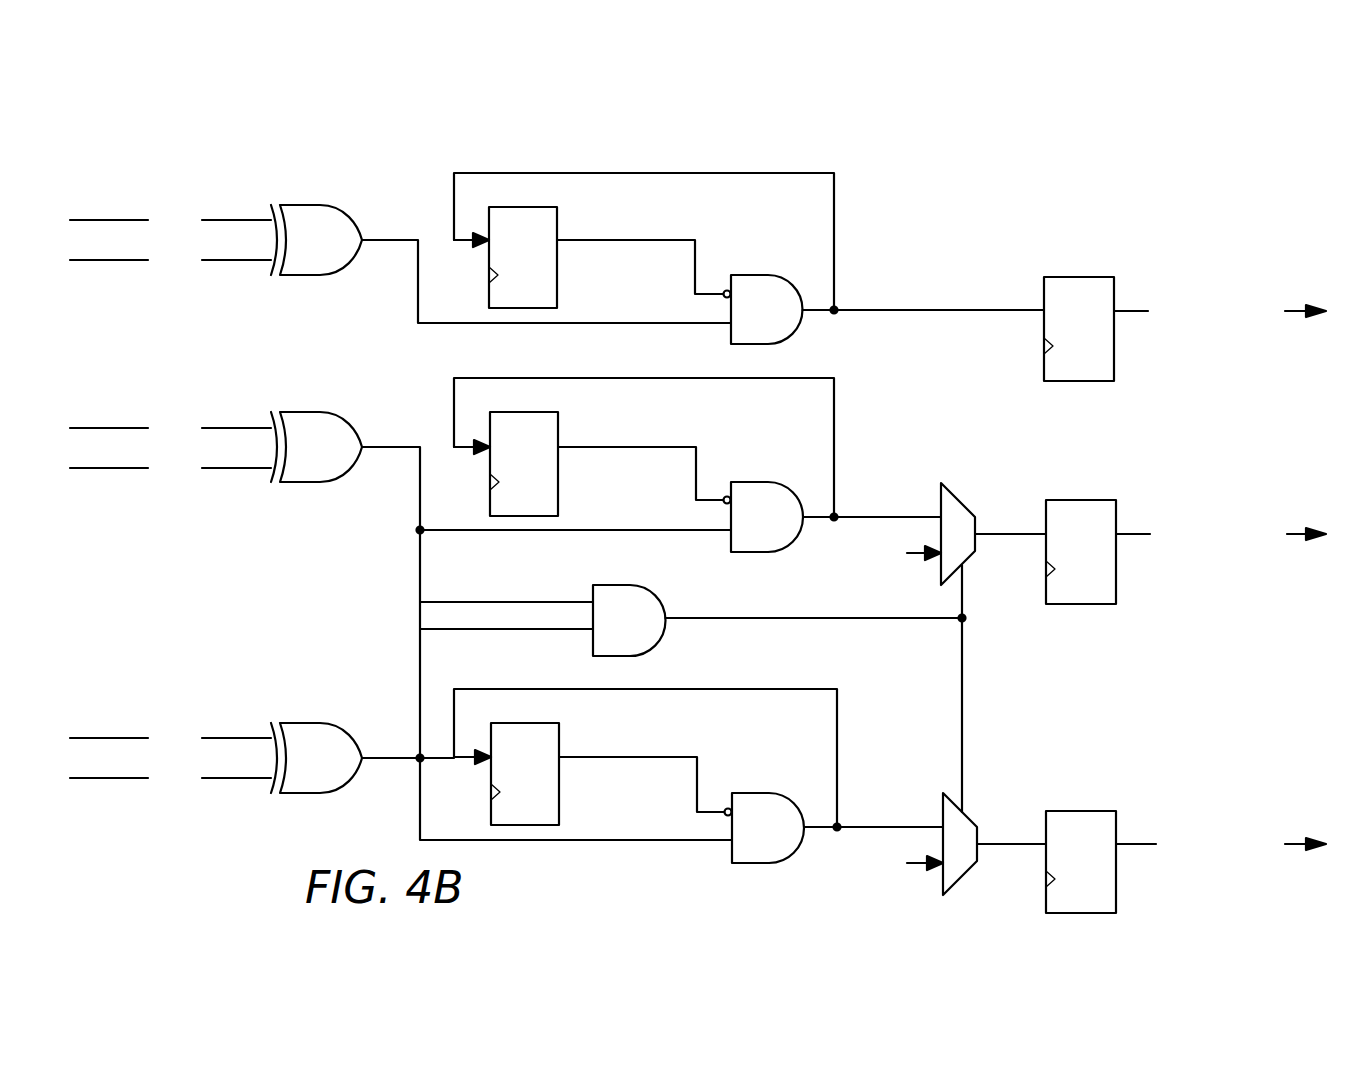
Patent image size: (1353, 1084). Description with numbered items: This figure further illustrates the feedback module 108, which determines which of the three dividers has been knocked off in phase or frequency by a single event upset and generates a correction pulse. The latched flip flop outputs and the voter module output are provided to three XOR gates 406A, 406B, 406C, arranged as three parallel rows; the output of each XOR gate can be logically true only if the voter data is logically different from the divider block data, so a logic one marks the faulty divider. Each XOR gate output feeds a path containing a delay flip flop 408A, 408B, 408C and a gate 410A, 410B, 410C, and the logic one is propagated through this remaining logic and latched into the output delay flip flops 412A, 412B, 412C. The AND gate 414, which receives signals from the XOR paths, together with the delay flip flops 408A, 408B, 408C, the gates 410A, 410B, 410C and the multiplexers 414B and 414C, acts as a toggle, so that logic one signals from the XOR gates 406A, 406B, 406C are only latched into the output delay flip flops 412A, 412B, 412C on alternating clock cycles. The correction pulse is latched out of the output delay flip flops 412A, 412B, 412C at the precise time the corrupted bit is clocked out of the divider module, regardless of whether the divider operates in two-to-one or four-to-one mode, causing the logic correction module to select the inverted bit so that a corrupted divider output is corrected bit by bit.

The feedback module 108 is at (698, 491).
The XOR gate 406A is at (317, 205).
The XOR gate 406B is at (317, 411).
The XOR gate 406C is at (300, 722).
The delay flip flop 408A is at (549, 226).
The delay flip flop 408B is at (549, 429).
The delay flip flop 408C is at (549, 741).
The gate 410A is at (742, 277).
The gate 410B is at (742, 483).
The gate 410C is at (742, 793).
The output delay flip flop 412A is at (1078, 277).
The output delay flip flop 412B is at (1083, 500).
The output delay flip flop 412C is at (1083, 811).
The AND gate 414 is at (664, 609).
The multiplexer 414B is at (953, 502).
The multiplexer 414C is at (968, 827).